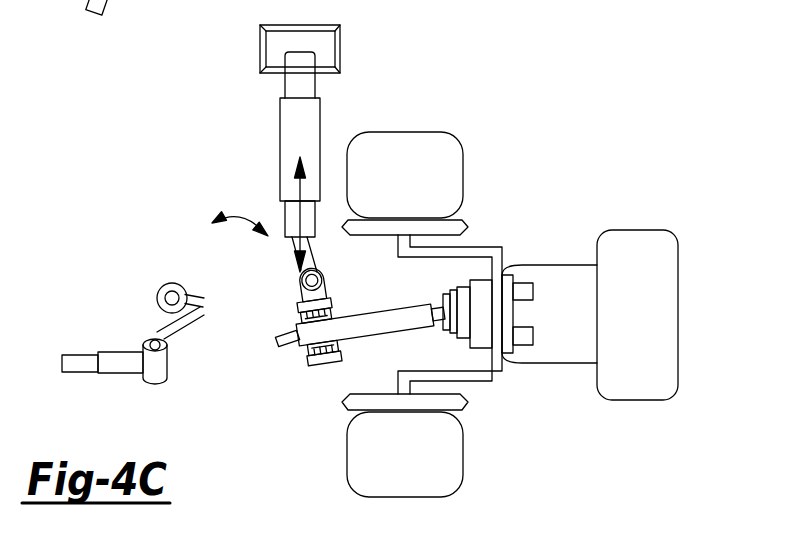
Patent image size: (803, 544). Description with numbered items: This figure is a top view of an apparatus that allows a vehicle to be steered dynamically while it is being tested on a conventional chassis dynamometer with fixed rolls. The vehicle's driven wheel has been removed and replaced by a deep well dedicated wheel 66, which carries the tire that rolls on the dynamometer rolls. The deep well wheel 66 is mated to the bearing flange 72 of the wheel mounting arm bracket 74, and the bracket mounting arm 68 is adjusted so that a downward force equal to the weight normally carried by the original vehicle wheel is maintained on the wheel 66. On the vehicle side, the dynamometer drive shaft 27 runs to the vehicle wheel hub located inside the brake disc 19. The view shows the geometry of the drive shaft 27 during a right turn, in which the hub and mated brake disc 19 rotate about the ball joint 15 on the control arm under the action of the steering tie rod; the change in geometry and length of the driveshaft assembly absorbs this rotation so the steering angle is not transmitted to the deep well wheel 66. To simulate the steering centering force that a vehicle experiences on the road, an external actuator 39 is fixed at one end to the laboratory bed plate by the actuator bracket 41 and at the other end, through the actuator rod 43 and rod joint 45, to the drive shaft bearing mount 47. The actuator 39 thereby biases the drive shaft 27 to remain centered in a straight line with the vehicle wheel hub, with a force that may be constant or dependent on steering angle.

The ball joint 15 is at (172, 298).
The brake disc 19 is at (195, 370).
The dynamometer drive shaft 27 is at (395, 327).
The external actuator 39 is at (305, 120).
The actuator bracket 41 is at (325, 45).
The actuator rod 43 is at (305, 245).
The rod joint 45 is at (317, 277).
The drive shaft bearing mount 47 is at (323, 373).
The deep well dedicated wheel 66 is at (485, 383).
The bracket mounting arm 68 is at (635, 245).
The bearing flange 72 is at (507, 343).
The wheel mounting arm bracket 74 is at (567, 288).